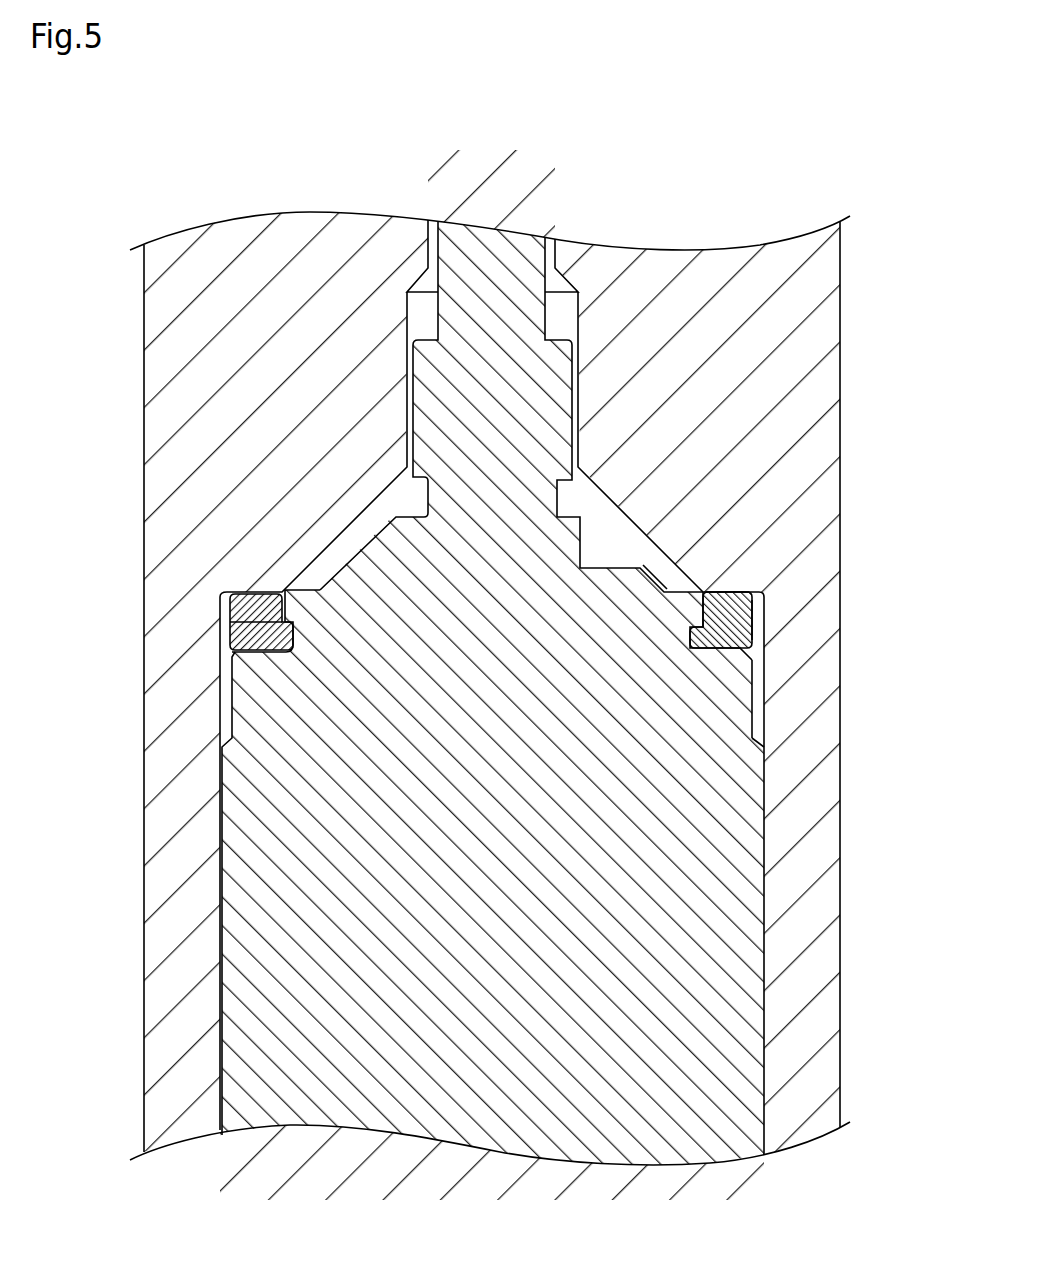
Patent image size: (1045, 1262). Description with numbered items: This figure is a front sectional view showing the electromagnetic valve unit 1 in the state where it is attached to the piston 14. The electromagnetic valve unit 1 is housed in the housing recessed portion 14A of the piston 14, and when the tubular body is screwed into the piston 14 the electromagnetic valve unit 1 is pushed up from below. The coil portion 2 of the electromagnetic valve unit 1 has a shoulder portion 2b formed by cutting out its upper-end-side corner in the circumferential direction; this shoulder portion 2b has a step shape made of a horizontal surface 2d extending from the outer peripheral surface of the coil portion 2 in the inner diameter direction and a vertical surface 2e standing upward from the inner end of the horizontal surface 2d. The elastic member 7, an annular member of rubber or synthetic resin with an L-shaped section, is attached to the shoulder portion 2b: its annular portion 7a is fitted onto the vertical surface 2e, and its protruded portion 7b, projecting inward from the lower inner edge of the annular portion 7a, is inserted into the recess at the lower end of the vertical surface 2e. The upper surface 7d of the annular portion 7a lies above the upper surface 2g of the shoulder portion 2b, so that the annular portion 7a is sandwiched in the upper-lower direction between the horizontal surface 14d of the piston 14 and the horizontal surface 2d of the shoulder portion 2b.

The electromagnetic valve unit 1 is at (768, 675).
The coil portion 2 is at (730, 898).
The shoulder portion 2b is at (162, 626).
The horizontal surface 2d is at (230, 630).
The vertical surface 2e is at (230, 617).
The upper surface 2g is at (300, 590).
The elastic member 7 is at (809, 560).
The annular portion 7a is at (728, 592).
The protruded portion 7b is at (753, 695).
The upper surface 7d is at (710, 592).
The piston 14 is at (805, 397).
The housing recessed portion 14A is at (767, 985).
The horizontal surface 14d is at (762, 625).